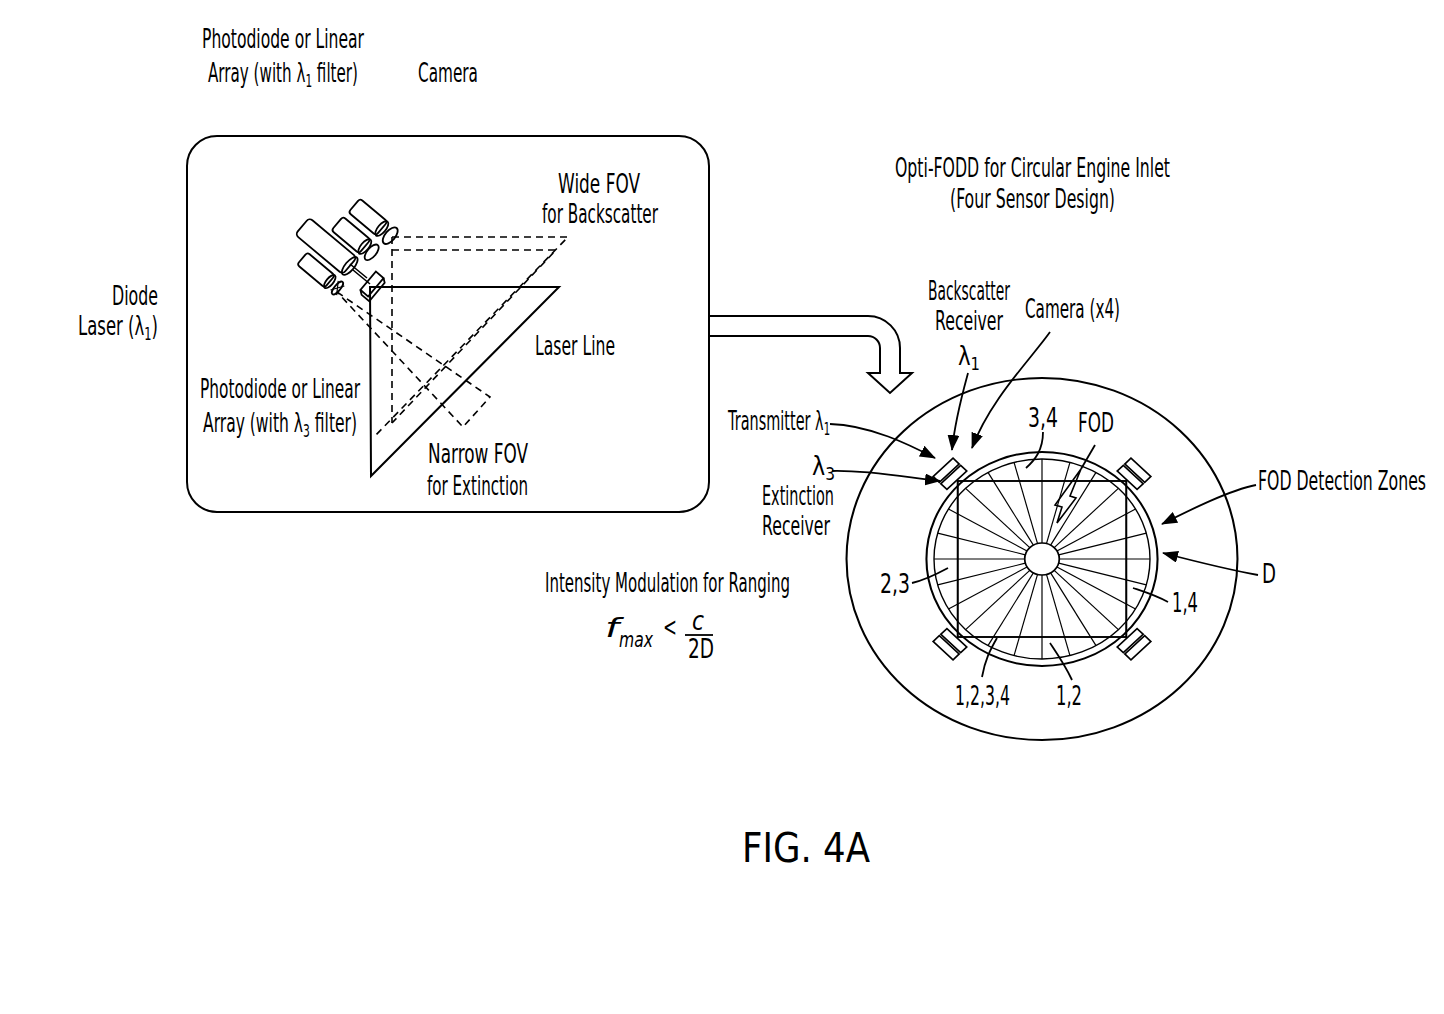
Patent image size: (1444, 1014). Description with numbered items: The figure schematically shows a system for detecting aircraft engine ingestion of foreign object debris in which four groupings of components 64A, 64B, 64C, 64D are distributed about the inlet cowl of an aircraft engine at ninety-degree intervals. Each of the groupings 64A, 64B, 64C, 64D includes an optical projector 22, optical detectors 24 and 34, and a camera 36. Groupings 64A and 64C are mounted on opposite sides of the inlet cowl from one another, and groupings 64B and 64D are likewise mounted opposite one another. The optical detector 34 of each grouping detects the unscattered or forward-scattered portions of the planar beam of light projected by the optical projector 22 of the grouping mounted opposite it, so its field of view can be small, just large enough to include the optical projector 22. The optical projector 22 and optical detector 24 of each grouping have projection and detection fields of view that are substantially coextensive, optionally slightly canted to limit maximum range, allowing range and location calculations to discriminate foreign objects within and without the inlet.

The optical projector 22 is at (292, 228).
The optical detector 24 is at (333, 221).
The optical detector 34 is at (298, 272).
The camera 36 is at (375, 204).
The grouping of components 64A is at (940, 452).
The grouping of components 64B is at (1150, 455).
The grouping of components 64C is at (1152, 658).
The grouping of components 64D is at (935, 660).